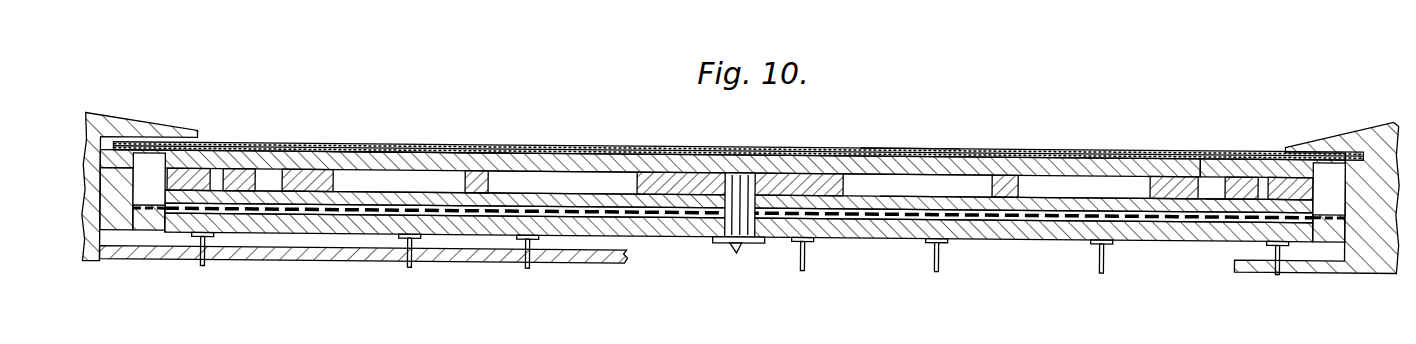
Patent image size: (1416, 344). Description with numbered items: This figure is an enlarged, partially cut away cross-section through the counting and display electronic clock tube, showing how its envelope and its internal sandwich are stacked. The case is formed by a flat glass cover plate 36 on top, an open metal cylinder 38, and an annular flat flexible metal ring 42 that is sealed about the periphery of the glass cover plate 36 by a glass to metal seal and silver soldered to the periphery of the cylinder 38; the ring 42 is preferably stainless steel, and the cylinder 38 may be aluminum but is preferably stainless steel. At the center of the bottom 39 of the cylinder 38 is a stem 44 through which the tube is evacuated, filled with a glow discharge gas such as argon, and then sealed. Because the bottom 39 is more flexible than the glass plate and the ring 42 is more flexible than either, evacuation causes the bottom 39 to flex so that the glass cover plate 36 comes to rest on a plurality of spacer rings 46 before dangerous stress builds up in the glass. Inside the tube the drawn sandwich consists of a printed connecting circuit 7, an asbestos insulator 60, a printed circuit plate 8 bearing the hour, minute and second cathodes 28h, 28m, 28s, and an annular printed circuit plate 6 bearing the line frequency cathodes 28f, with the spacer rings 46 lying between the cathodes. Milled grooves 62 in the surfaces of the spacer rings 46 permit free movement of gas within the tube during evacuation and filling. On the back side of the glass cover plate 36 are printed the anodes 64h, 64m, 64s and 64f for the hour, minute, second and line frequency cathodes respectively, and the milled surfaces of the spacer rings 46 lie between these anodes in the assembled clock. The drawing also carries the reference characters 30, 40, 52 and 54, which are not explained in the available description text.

The annular printed circuit plate 6 is at (1217, 197).
The printed connecting circuit 7 is at (458, 218).
The printed circuit plate 8 is at (1068, 197).
The second cathodes 28s is at (195, 170).
The line frequency cathodes 28f is at (270, 184).
The minute cathodes 28m is at (378, 195).
The hour cathodes 28h is at (517, 195).
The top cover sheet 30 is at (240, 142).
The glass cover plate 36 is at (577, 163).
The metal cylinder 38 is at (1380, 173).
The bottom of cylinder 39 is at (1022, 230).
The base plate 40 is at (290, 253).
The annular flat flexible metal ring 42 is at (1277, 158).
The stem 44 is at (731, 238).
The spacer rings 46 is at (900, 150).
The upper thin layer 52 is at (357, 147).
The lower thin layer 54 is at (427, 147).
The asbestos insulator 60 is at (152, 208).
The milled grooves 62 is at (803, 177).
The second anodes 64s is at (217, 170).
The line frequency anodes 64f is at (268, 170).
The minute anodes 64m is at (443, 173).
The hour anodes 64h is at (622, 150).